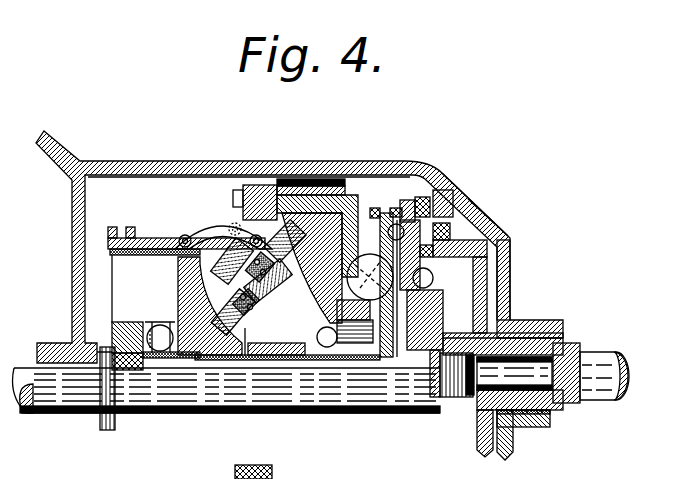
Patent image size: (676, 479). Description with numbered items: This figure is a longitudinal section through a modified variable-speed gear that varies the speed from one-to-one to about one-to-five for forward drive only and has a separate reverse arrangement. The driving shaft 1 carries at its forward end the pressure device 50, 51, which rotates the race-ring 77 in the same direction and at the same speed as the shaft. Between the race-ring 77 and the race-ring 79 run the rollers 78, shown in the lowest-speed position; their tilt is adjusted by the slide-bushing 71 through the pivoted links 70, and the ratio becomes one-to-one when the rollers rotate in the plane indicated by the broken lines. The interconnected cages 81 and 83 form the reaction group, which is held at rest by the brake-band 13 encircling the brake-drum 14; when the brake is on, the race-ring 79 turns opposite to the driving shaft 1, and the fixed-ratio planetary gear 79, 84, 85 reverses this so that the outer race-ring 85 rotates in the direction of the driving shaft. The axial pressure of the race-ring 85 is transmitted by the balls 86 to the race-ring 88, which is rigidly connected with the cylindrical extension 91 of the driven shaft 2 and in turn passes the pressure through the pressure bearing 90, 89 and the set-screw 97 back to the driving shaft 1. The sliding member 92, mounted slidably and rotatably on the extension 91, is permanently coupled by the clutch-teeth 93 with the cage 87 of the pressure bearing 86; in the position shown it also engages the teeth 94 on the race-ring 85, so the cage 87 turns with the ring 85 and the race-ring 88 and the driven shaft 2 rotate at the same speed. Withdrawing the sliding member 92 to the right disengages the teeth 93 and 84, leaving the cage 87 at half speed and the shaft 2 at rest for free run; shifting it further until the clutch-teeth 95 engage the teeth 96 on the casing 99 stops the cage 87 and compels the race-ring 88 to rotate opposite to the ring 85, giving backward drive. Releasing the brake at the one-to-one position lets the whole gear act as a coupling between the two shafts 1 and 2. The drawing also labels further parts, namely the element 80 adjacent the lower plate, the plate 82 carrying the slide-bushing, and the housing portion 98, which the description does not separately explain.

The driving shaft 1 is at (53, 397).
The driven shaft 2 is at (597, 400).
The brake-band 13 is at (283, 186).
The brake-drum 14 is at (308, 179).
The pressure device 50 is at (130, 350).
The pressure device 51 is at (160, 353).
The pivoted links 70 is at (200, 221).
The slide-bushing 71 is at (131, 227).
The race-ring 77 is at (193, 355).
The rollers 78 is at (233, 355).
The race-ring 79 is at (293, 355).
The ball 80 is at (325, 348).
The cage 81 is at (253, 185).
The support plate 82 is at (157, 237).
The cage 83 is at (333, 195).
The planetary gear element 84 is at (365, 299).
The outer race-ring 85 is at (423, 210).
The balls 86 is at (421, 199).
The cage 87 is at (402, 220).
The race-ring 88 is at (464, 213).
The pressure bearing 89 is at (418, 327).
The pressure bearing 90 is at (447, 248).
The cylindrical extension 91 is at (511, 233).
The sliding member 92 is at (483, 214).
The clutch-teeth 93 is at (393, 217).
The teeth 94 is at (380, 213).
The clutch-teeth 95 is at (440, 203).
The teeth 96 is at (470, 200).
The set-screw 97 is at (452, 397).
The housing 98 is at (81, 163).
The casing 99 is at (500, 222).